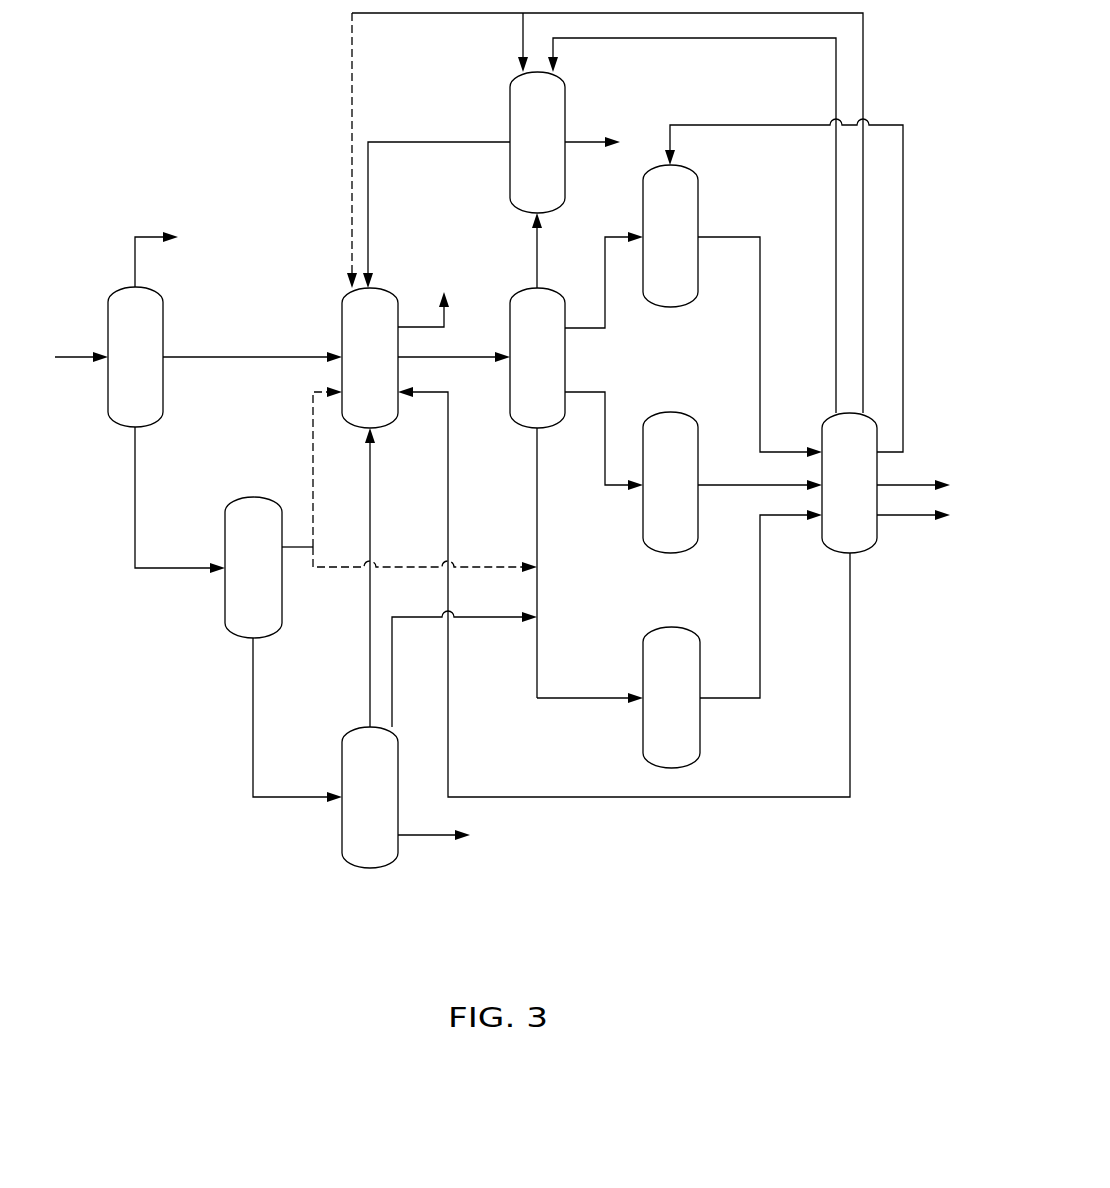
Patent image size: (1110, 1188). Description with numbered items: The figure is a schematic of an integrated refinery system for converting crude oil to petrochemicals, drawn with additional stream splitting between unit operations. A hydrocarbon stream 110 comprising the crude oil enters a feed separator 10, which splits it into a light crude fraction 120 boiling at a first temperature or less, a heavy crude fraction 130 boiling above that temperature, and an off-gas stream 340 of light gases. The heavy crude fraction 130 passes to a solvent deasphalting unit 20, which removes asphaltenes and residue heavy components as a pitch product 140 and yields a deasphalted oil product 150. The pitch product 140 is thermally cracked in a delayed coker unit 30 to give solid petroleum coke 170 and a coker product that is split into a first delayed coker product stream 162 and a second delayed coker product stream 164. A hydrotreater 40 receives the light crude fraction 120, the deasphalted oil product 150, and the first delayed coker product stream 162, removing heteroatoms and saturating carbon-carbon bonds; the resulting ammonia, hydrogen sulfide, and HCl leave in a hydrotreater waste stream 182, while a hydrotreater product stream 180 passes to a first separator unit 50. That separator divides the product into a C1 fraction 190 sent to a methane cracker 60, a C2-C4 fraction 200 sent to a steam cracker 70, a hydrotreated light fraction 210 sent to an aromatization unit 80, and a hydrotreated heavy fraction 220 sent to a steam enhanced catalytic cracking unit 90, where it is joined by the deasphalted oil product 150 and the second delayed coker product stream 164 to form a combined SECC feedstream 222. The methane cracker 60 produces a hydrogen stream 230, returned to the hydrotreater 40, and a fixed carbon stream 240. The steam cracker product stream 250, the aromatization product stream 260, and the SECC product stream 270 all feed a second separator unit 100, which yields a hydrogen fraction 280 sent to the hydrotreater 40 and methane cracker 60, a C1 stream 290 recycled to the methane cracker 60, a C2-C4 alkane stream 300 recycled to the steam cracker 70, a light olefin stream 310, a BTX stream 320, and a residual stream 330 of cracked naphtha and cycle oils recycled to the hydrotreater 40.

The feed separator 10 is at (126, 370).
The solvent deasphalting unit 20 is at (244, 581).
The delayed coker unit 30 is at (360, 811).
The hydrotreater 40 is at (360, 371).
The first separator unit 50 is at (528, 371).
The methane cracker 60 is at (528, 156).
The steam cracker 70 is at (661, 250).
The aromatization unit 80 is at (661, 496).
The steam enhanced catalytic cracking unit 90 is at (662, 711).
The second separator unit 100 is at (835, 497).
The hydrocarbon stream 110 is at (72, 352).
The light crude fraction 120 is at (240, 354).
The heavy crude fraction 130 is at (135, 490).
The pitch product 140 is at (253, 722).
The deasphalted oil product 150 is at (283, 554).
The first delayed coker product stream 162 is at (370, 714).
The second delayed coker product stream 164 is at (407, 622).
The solid petroleum coke 170 is at (422, 840).
The hydrotreater product stream 180 is at (461, 355).
The hydrotreater waste stream 182 is at (413, 324).
The C1 fraction 190 is at (537, 257).
The C2-C4 fraction 200 is at (608, 236).
The hydrotreated light fraction 210 is at (609, 484).
The hydrotreated heavy fraction 220 is at (537, 491).
The combined SECC feedstream 222 is at (537, 665).
The hydrogen stream 230 is at (441, 141).
The fixed carbon stream 240 is at (581, 141).
The steam cracker product stream 250 is at (728, 236).
The aromatization product stream 260 is at (714, 484).
The SECC product stream 270 is at (725, 702).
The hydrogen fraction 280 is at (863, 264).
The C1 stream 290 is at (835, 311).
The C2-C4 alkane stream 300 is at (903, 343).
The light olefin stream 310 is at (910, 482).
The BTX stream 320 is at (908, 519).
The residual stream 330 is at (850, 621).
The off-gas stream 340 is at (148, 234).